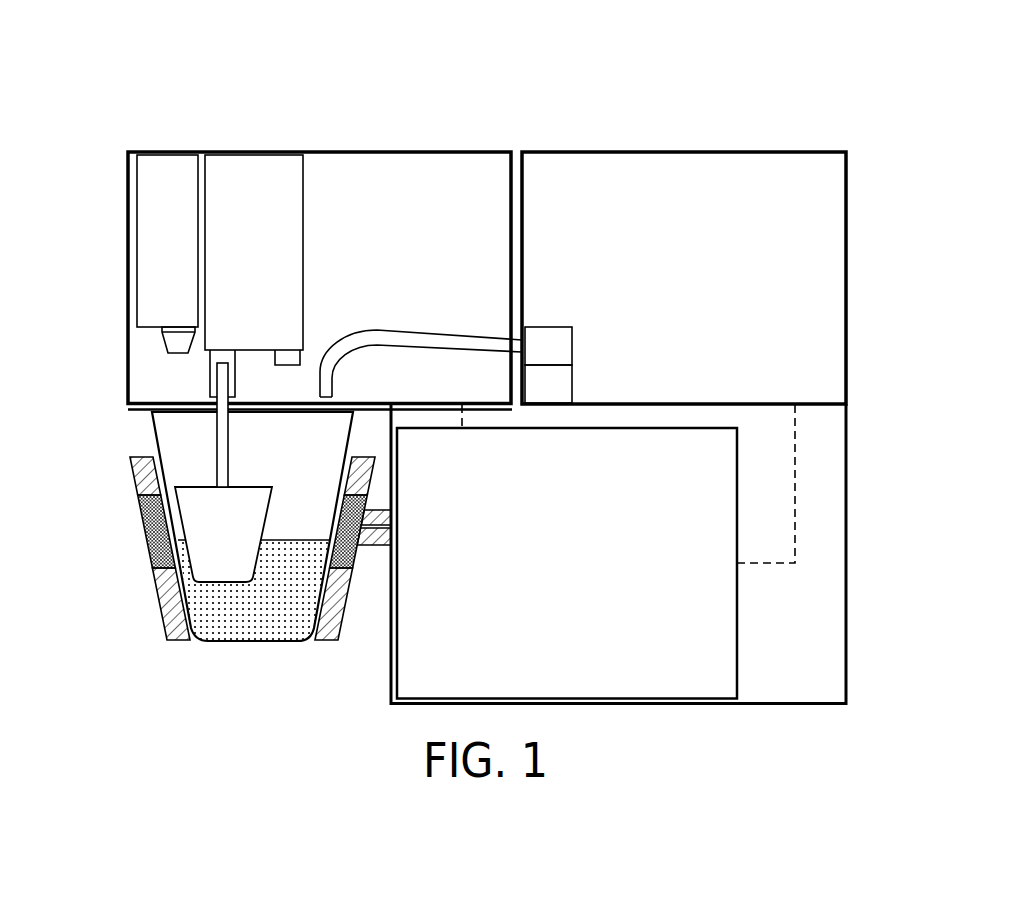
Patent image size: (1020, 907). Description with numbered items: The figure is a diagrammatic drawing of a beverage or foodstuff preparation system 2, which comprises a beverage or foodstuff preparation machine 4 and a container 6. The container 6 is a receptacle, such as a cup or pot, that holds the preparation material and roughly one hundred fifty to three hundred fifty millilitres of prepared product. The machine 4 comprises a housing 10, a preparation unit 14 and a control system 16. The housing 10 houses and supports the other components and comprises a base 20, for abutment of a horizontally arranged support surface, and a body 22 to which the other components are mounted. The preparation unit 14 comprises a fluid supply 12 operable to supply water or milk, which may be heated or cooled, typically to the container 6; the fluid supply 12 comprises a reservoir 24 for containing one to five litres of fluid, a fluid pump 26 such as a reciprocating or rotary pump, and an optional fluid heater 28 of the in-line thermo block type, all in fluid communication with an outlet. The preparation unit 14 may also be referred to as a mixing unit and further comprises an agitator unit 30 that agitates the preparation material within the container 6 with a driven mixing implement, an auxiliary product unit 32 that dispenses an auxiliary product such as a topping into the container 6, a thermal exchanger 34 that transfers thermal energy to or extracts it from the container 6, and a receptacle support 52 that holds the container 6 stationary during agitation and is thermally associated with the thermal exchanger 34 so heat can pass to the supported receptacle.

The beverage or foodstuff preparation system 2 is at (110, 54).
The beverage or foodstuff preparation machine 4 is at (106, 146).
The container 6 is at (267, 469).
The housing 10 is at (564, 147).
The fluid supply 12 is at (852, 176).
The preparation unit 14 is at (61, 154).
The control system 16 is at (554, 569).
The base 20 is at (440, 150).
The body 22 is at (724, 138).
The reservoir 24 is at (791, 199).
The fluid pump 26 is at (534, 359).
The fluid heater 28 is at (534, 397).
The agitator unit 30 is at (203, 148).
The auxiliary product unit 32 is at (155, 257).
The thermal exchanger 34 is at (148, 542).
The receptacle support 52 is at (138, 473).